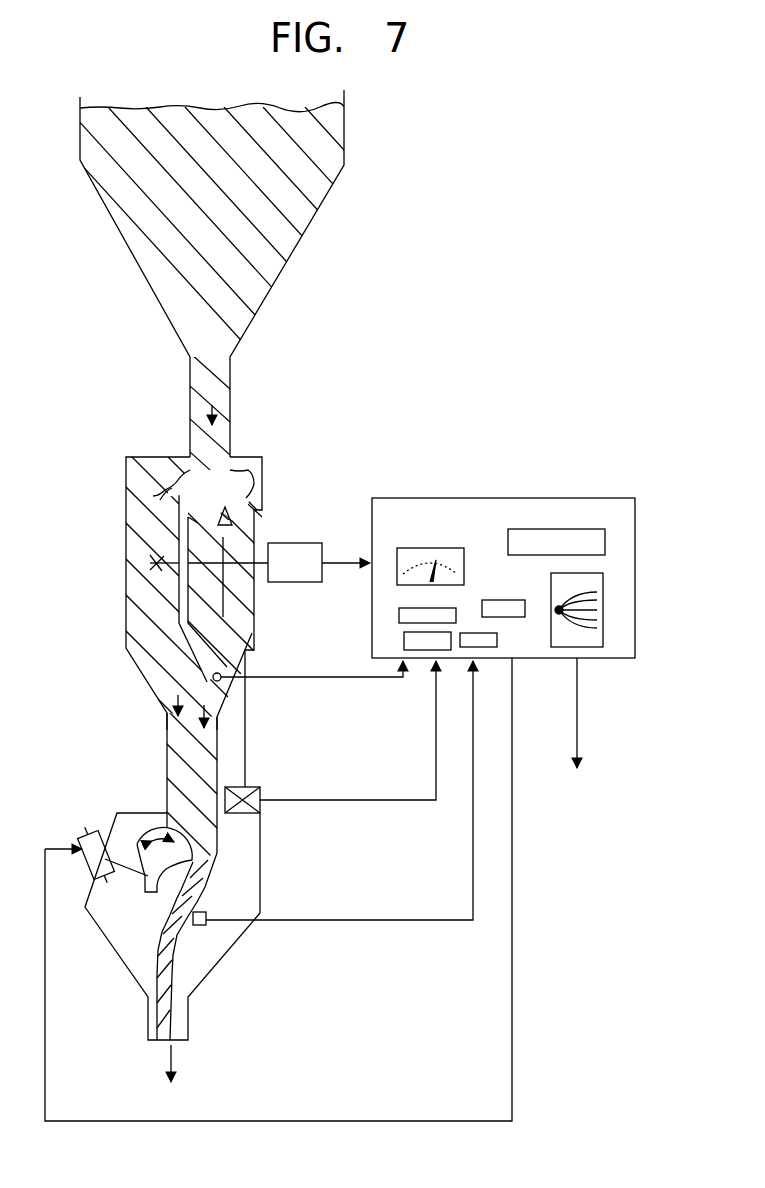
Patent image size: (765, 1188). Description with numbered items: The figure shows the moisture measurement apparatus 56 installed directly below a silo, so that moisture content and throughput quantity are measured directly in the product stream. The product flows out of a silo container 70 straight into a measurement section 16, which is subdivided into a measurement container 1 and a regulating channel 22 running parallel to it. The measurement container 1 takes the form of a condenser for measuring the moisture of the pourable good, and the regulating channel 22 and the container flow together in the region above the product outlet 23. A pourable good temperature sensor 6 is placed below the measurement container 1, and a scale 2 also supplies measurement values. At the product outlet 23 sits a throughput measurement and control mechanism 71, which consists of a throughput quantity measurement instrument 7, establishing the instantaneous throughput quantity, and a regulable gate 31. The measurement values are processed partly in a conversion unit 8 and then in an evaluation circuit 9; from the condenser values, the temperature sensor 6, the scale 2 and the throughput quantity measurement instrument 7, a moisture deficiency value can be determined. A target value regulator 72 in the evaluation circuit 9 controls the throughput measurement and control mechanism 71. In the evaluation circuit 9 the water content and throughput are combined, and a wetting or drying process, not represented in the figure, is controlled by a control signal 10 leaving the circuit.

The silo container 70 is at (371, 323).
The measurement section 16 is at (236, 459).
The regulating channel 22 is at (104, 508).
The measurement container 1 is at (200, 615).
The conversion unit 8 is at (373, 509).
The evaluation circuit 9 is at (536, 523).
The target value regulator 72 is at (479, 648).
The control signal 10 is at (577, 729).
The pourable good temperature sensor 6 is at (222, 679).
The product outlet 23 is at (200, 828).
The scale 2 is at (262, 790).
The throughput measurement and control mechanism 71 is at (278, 889).
The gate 31 is at (153, 832).
The throughput quantity measurement instrument 7 is at (200, 925).
The moisture measurement apparatus 56 is at (63, 694).